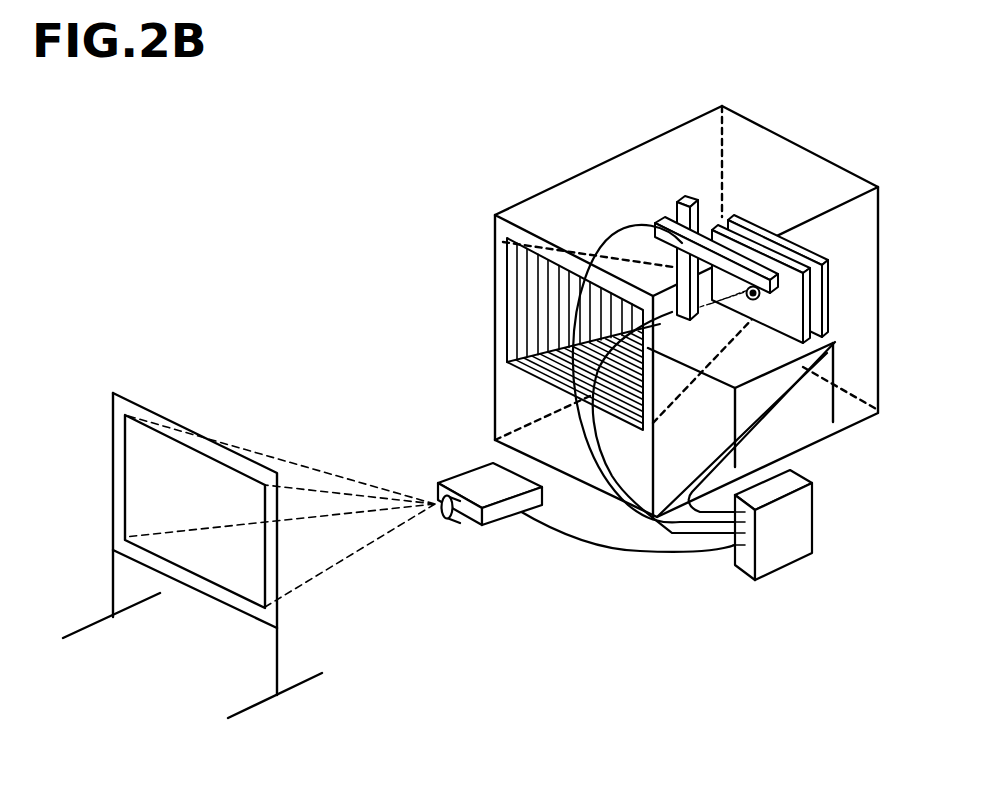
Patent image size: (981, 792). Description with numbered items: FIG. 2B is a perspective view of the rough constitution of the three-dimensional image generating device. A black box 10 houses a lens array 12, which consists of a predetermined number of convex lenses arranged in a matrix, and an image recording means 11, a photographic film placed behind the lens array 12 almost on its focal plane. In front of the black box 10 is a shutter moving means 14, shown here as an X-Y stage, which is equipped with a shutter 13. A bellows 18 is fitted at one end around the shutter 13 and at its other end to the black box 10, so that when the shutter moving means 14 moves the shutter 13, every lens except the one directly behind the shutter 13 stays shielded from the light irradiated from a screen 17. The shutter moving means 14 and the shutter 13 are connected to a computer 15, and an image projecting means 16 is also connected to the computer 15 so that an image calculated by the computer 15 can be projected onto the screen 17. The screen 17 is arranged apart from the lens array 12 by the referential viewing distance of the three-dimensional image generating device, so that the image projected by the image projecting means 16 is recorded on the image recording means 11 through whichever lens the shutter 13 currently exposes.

The black box 10 is at (840, 167).
The image recording means 11 is at (831, 278).
The lens array 12 is at (780, 325).
The shutter 13 is at (748, 302).
The shutter moving means 14 is at (678, 216).
The computer 15 is at (802, 553).
The image projecting means 16 is at (495, 528).
The screen 17 is at (147, 403).
The bellows 18 is at (533, 278).